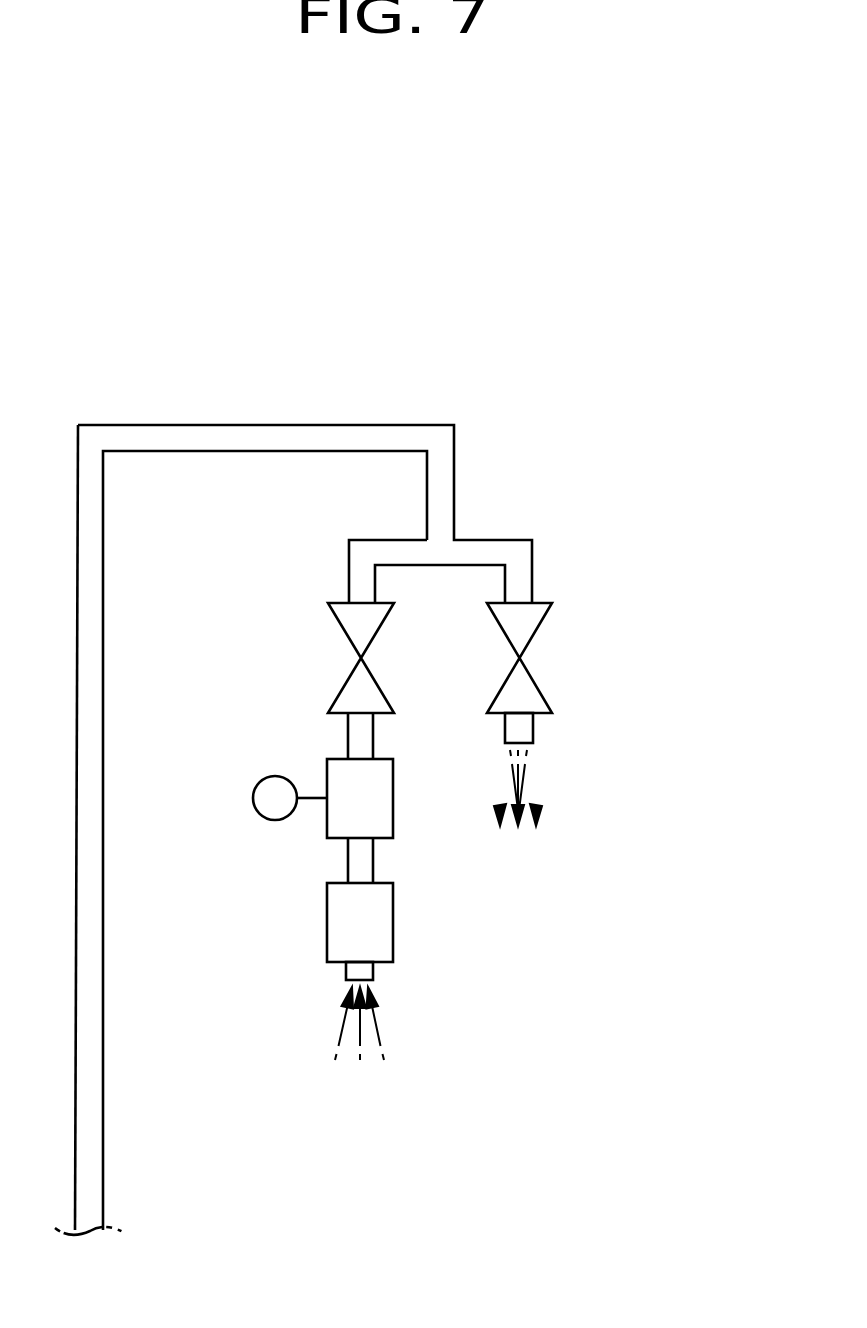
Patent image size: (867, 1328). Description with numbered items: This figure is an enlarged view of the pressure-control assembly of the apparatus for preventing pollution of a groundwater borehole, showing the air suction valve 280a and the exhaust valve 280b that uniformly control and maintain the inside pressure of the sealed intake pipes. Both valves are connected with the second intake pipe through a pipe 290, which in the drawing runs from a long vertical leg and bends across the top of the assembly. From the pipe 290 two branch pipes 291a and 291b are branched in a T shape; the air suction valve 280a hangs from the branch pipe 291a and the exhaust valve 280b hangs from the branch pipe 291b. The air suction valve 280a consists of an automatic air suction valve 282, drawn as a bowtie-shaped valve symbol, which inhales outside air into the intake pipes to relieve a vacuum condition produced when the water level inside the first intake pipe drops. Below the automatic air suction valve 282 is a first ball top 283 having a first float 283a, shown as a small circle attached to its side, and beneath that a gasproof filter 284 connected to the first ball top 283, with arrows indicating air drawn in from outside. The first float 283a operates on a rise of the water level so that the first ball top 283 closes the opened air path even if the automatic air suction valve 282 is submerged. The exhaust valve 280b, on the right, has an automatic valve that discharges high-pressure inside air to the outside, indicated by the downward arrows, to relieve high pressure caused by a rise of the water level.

The pipe 290 is at (271, 435).
The branch pipe 291a is at (357, 583).
The branch pipe 291b is at (520, 582).
The automatic air suction valve 282 is at (353, 623).
The first ball top 283 is at (345, 825).
The first float 283a is at (268, 793).
The gasproof filter 284 is at (342, 935).
The air suction valve 280a is at (345, 831).
The exhaust valve 280b is at (530, 623).